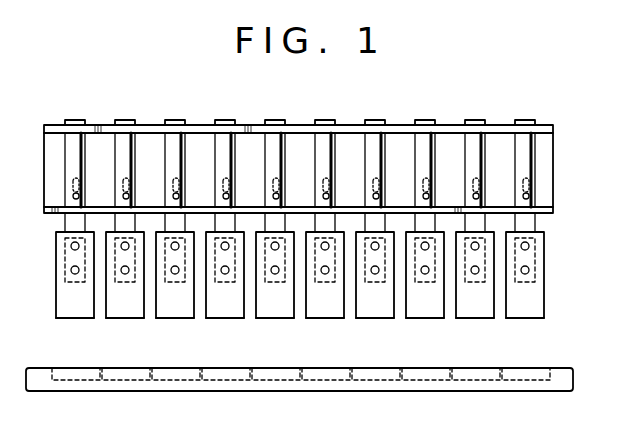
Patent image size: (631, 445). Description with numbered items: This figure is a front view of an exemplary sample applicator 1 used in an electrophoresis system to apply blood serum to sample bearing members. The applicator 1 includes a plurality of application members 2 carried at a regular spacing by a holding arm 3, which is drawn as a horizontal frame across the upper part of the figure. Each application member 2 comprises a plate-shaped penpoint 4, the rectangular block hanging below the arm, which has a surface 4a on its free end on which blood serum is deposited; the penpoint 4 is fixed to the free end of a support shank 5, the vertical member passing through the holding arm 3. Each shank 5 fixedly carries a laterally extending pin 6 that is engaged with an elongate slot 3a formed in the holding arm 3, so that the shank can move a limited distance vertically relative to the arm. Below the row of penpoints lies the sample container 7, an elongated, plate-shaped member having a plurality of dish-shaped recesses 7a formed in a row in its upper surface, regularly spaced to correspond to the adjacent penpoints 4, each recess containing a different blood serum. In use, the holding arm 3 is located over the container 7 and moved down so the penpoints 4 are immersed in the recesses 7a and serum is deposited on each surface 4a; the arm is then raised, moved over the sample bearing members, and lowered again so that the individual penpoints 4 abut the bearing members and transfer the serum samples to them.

The applicator 1 is at (424, 99).
The application member 2 is at (324, 295).
The holding arm 3 is at (546, 168).
The elongate slot 3a is at (561, 185).
The plate-shaped penpoint 4 is at (538, 297).
The surface 4a is at (462, 318).
The support shank 5 is at (431, 148).
The pin 6 is at (421, 197).
The sample container 7 is at (503, 390).
The dish-shaped recess 7a is at (505, 372).